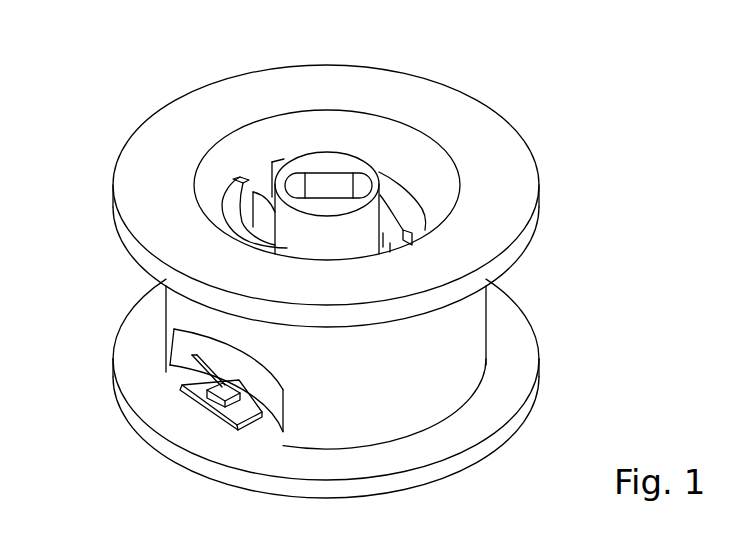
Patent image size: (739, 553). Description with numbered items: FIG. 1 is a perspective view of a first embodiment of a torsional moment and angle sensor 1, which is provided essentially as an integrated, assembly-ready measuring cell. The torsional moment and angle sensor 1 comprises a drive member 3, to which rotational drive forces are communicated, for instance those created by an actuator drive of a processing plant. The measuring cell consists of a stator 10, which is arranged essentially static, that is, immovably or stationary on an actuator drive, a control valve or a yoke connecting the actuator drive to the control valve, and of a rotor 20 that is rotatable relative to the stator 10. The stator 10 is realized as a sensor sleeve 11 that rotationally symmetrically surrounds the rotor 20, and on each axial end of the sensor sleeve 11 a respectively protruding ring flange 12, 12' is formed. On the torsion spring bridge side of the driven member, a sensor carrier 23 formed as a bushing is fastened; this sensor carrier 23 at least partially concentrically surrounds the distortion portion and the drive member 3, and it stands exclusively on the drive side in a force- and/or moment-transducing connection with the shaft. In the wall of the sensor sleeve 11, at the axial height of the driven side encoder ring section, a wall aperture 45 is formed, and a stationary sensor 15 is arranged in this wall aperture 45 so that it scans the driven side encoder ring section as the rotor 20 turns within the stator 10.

The torsional moment and angle sensor 1 is at (499, 67).
The drive member 3 is at (333, 167).
The stator 10 is at (531, 148).
The sensor sleeve 11 is at (463, 340).
The ring flange 12 is at (360, 388).
The ring flange 12' is at (289, 231).
The stationary sensor 15 is at (162, 382).
The rotor 20 is at (355, 156).
The sensor carrier 23 is at (423, 217).
The wall aperture 45 is at (275, 401).